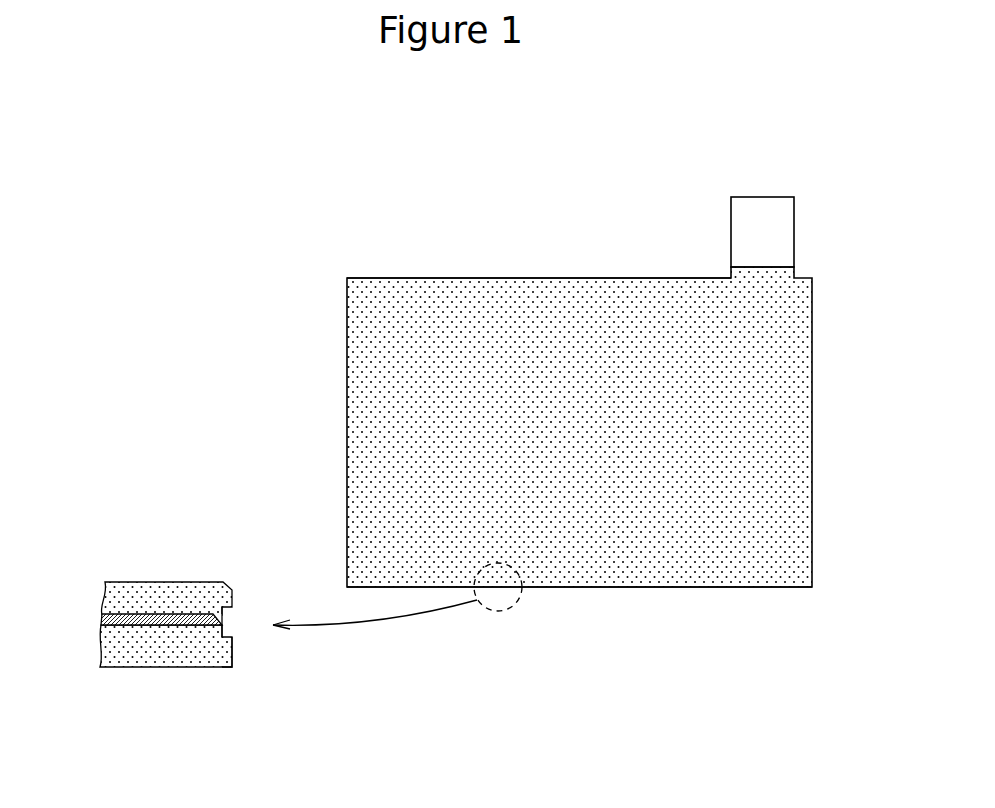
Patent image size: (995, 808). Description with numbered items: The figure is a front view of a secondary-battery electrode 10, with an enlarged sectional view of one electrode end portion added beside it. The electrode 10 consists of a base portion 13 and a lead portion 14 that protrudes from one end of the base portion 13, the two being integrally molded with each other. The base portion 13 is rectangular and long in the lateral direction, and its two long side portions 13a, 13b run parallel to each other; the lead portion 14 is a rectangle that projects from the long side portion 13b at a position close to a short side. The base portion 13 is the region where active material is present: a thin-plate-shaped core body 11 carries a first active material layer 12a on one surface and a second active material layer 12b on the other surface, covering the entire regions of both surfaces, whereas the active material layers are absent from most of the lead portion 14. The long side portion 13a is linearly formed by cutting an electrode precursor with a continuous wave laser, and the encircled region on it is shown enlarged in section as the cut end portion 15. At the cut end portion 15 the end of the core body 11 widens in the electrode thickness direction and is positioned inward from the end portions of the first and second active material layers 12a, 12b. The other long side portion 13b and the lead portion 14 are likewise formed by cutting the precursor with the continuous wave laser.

The secondary-battery electrode 10 is at (570, 368).
The core body 11 is at (103, 621).
The first active material layer 12a is at (167, 580).
The second active material layer 12b is at (157, 668).
The base portion 13 is at (370, 480).
The long side portion 13a is at (643, 588).
The long side portion 13b is at (553, 277).
The lead portion 14 is at (745, 234).
The cut end portion 15 is at (238, 662).